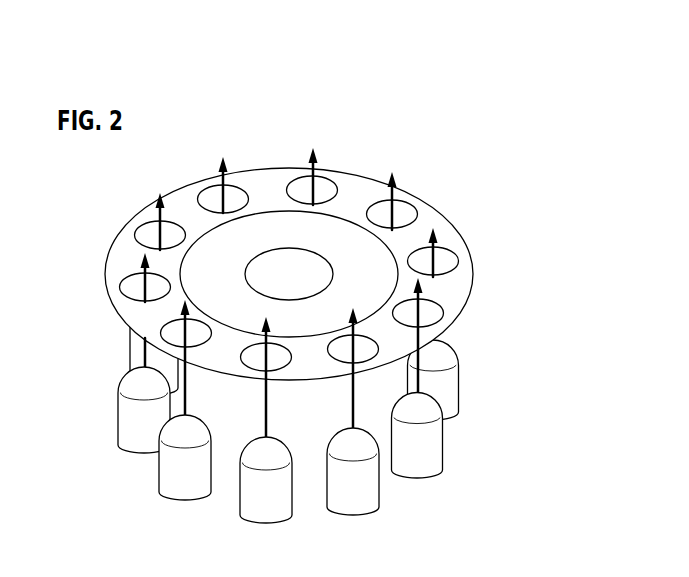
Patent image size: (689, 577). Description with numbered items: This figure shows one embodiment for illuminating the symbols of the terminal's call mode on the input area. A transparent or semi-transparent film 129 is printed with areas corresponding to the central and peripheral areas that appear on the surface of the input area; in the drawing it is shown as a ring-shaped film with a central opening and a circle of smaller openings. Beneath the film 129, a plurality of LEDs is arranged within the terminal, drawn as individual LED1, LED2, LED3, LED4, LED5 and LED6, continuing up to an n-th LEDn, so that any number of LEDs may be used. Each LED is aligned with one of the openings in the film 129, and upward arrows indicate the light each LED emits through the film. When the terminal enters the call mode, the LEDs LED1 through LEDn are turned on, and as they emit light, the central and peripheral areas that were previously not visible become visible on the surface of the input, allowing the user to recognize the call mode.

The transparent or semi-transparent film 129 is at (430, 212).
The LED LED1 is at (116, 411).
The LED LED2 is at (173, 472).
The LED LED3 is at (266, 496).
The LED LED4 is at (353, 487).
The LED LED5 is at (433, 452).
The LED LED6 is at (461, 380).
The LED LEDn is at (126, 345).